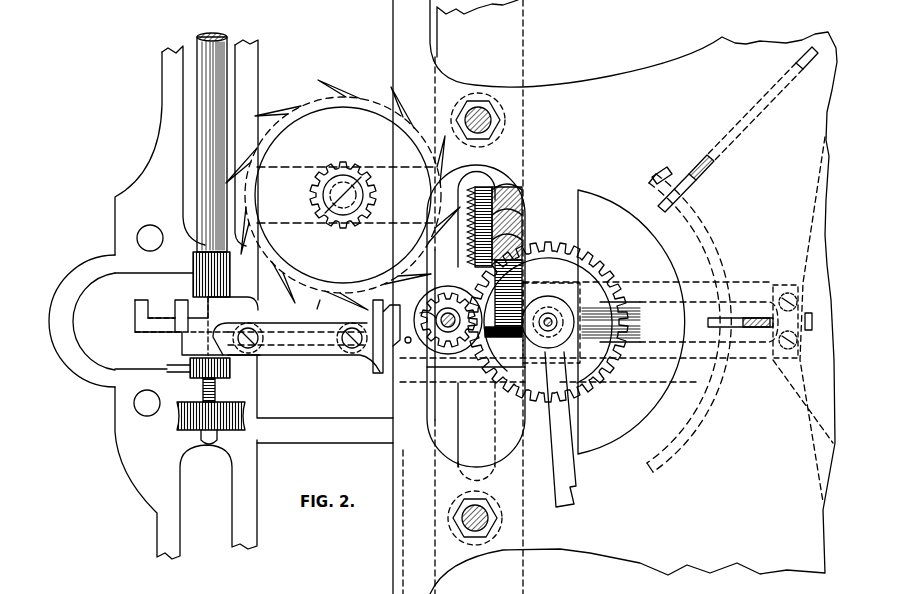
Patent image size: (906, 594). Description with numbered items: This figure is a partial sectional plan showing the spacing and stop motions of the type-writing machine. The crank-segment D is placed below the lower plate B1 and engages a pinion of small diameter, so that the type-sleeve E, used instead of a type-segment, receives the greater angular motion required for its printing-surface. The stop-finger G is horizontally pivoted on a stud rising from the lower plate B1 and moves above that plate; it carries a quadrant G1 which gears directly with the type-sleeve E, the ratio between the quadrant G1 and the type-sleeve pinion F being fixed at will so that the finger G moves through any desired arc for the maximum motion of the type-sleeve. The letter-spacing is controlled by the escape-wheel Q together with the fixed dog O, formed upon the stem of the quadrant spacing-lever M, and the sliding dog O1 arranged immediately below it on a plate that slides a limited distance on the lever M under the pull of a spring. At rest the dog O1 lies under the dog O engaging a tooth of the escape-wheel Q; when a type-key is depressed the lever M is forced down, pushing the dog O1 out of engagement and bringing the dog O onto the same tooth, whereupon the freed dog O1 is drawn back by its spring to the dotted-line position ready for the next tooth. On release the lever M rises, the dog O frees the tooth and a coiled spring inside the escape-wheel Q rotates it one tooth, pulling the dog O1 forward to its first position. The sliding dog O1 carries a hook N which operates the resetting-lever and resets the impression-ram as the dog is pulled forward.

The escape-wheel Q is at (343, 195).
The lower plate B1 is at (651, 315).
The crank-segment D is at (480, 190).
The type-sleeve E is at (448, 290).
The type-sleeve pinion F is at (428, 313).
The quadrant G1 is at (546, 248).
The stop-finger G is at (566, 486).
The quadrant spacing-lever M is at (338, 358).
The hook N is at (180, 306).
The fixed dog O is at (395, 344).
The sliding dog O1 is at (318, 311).